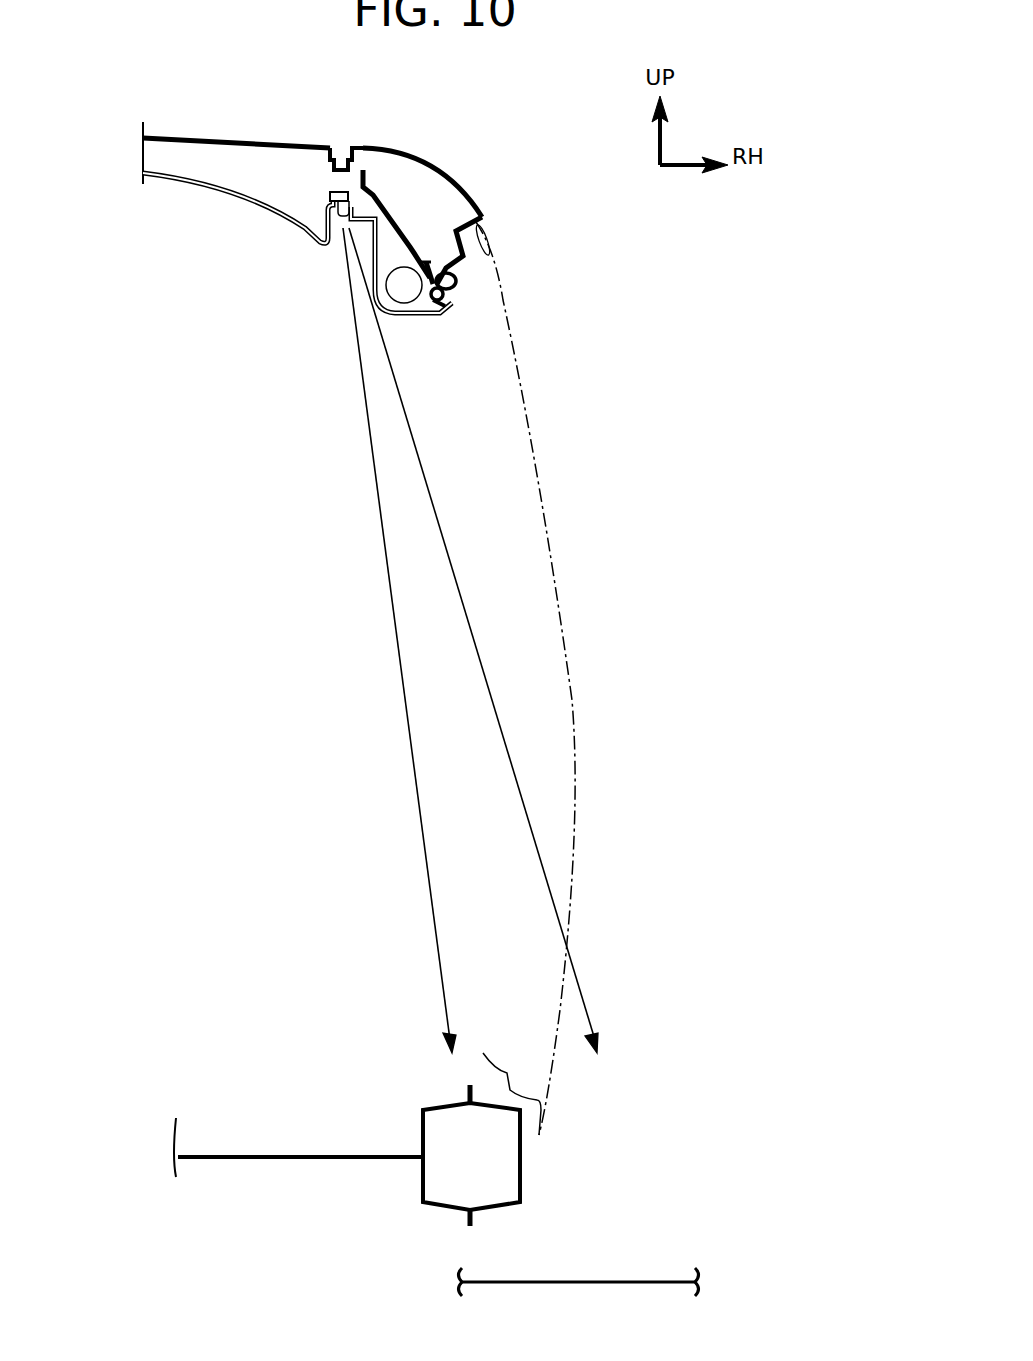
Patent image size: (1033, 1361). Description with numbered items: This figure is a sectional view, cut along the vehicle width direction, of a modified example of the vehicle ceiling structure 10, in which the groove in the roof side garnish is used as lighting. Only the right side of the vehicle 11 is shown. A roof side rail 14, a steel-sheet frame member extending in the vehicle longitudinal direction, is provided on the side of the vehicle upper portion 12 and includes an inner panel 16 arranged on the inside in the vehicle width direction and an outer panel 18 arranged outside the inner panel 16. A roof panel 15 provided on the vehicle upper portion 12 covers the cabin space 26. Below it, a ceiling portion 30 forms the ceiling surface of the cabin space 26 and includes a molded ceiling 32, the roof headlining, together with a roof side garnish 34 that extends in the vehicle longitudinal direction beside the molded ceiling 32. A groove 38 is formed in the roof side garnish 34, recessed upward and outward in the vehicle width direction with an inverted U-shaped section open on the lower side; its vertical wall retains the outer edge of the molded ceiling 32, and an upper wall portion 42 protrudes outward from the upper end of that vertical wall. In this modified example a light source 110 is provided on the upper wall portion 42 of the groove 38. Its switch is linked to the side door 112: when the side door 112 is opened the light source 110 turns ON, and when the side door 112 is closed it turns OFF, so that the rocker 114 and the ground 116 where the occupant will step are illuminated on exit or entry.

The vehicle ceiling structure 10 is at (336, 262).
The vehicle 11 is at (627, 349).
The vehicle upper portion 12 is at (501, 131).
The roof side rail 14 is at (437, 169).
The roof panel 15 is at (178, 137).
The inner panel 16 is at (390, 218).
The outer panel 18 is at (484, 212).
The cabin space 26 is at (149, 434).
The ceiling portion 30 is at (192, 197).
The molded ceiling 32 is at (253, 207).
The roof side garnish 34 is at (415, 317).
The groove 38 is at (436, 640).
The upper wall portion 42 is at (363, 230).
The light source 110 is at (333, 190).
The side door 112 is at (574, 810).
The rocker 114 is at (522, 1157).
The ground 116 is at (640, 1280).